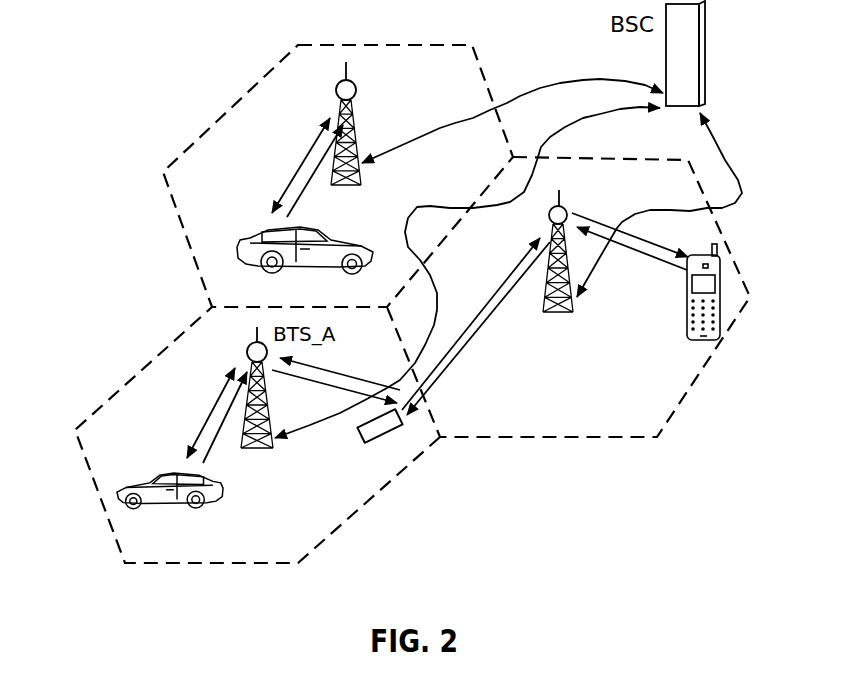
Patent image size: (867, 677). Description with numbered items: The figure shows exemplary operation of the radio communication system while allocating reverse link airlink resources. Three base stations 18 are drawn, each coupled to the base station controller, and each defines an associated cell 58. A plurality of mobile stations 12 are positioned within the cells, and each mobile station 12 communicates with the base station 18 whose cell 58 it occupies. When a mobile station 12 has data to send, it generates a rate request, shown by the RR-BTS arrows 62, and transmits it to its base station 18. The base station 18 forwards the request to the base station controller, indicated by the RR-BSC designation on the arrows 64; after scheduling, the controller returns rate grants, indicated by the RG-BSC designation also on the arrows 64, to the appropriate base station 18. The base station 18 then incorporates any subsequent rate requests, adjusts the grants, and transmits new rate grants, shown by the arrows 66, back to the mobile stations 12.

The cell 58 is at (333, 44).
The base station 18 is at (352, 82).
The mobile station 12 is at (252, 237).
The RR-BTS arrows 62 is at (289, 216).
The arrows 66 is at (322, 114).
The arrows 64 is at (417, 205).